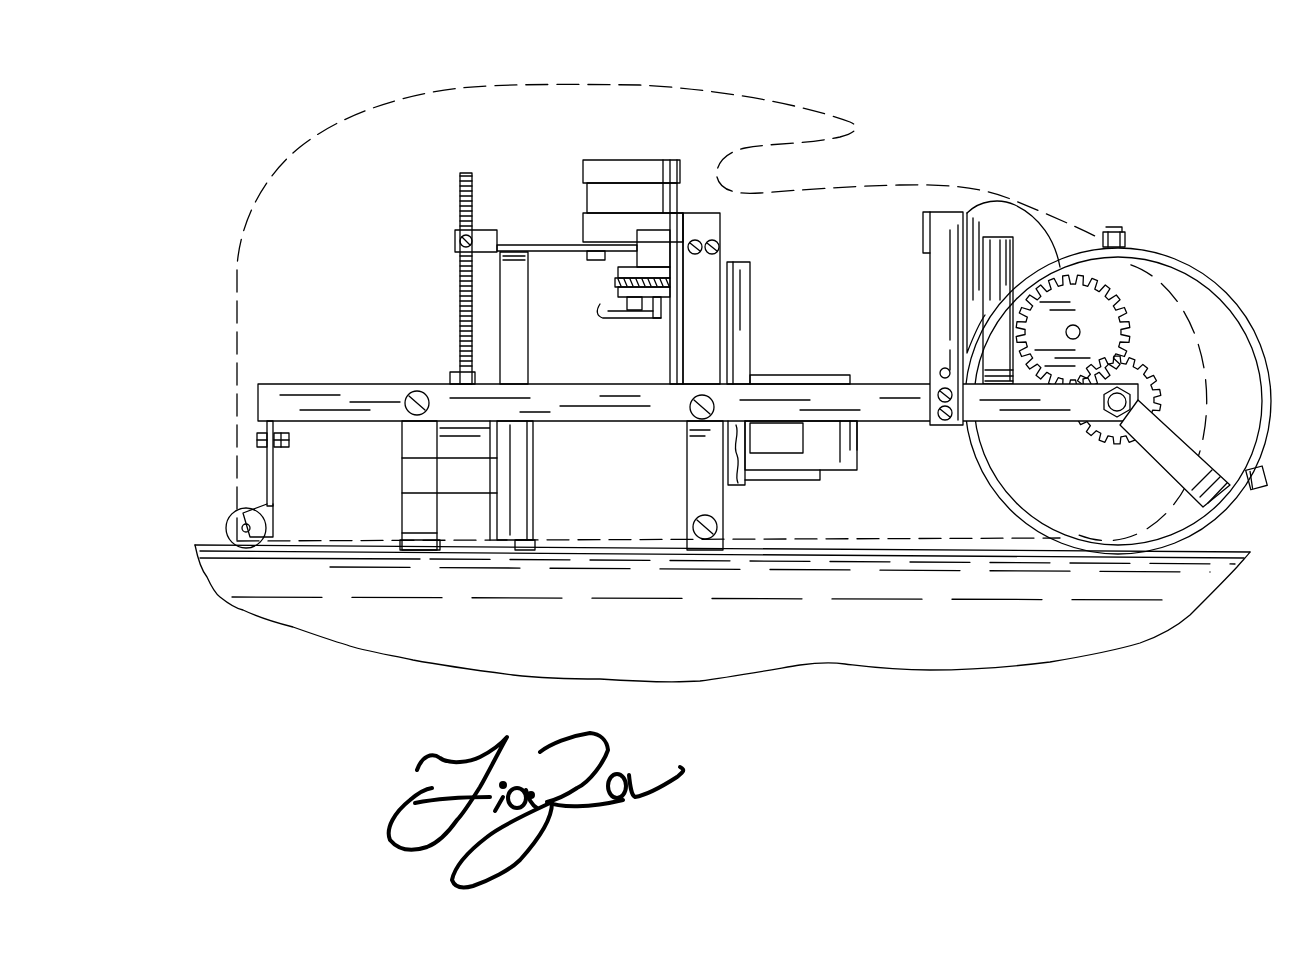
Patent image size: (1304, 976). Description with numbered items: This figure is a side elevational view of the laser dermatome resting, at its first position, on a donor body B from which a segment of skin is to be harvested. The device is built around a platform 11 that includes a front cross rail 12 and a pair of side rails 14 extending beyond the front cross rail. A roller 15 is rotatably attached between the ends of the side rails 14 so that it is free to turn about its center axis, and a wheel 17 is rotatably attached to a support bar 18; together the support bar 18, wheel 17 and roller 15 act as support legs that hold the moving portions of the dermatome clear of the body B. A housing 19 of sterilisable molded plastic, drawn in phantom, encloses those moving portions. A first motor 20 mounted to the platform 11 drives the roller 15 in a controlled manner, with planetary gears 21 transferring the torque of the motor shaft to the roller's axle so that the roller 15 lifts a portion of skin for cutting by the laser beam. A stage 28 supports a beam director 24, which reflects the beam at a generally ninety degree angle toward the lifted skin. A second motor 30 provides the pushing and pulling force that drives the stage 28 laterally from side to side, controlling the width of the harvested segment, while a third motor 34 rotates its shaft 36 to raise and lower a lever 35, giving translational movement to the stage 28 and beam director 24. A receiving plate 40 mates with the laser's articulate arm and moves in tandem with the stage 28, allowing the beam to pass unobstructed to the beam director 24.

The platform 11 is at (355, 378).
The front cross rail 12 is at (947, 212).
The side rails 14 is at (900, 423).
The roller 15 is at (1193, 260).
The wheel 17 is at (233, 522).
The support bar 18 is at (268, 470).
The housing 19 is at (640, 86).
The first motor 20 is at (1040, 220).
The planetary gears 21 is at (1110, 292).
The beam director 24 is at (790, 378).
The stage 28 is at (750, 485).
The second motor 30 is at (622, 162).
The third motor 34 is at (530, 478).
The lever 35 is at (540, 245).
The shaft 36 is at (463, 173).
The receiving plate 40 is at (733, 485).
The body B is at (253, 612).